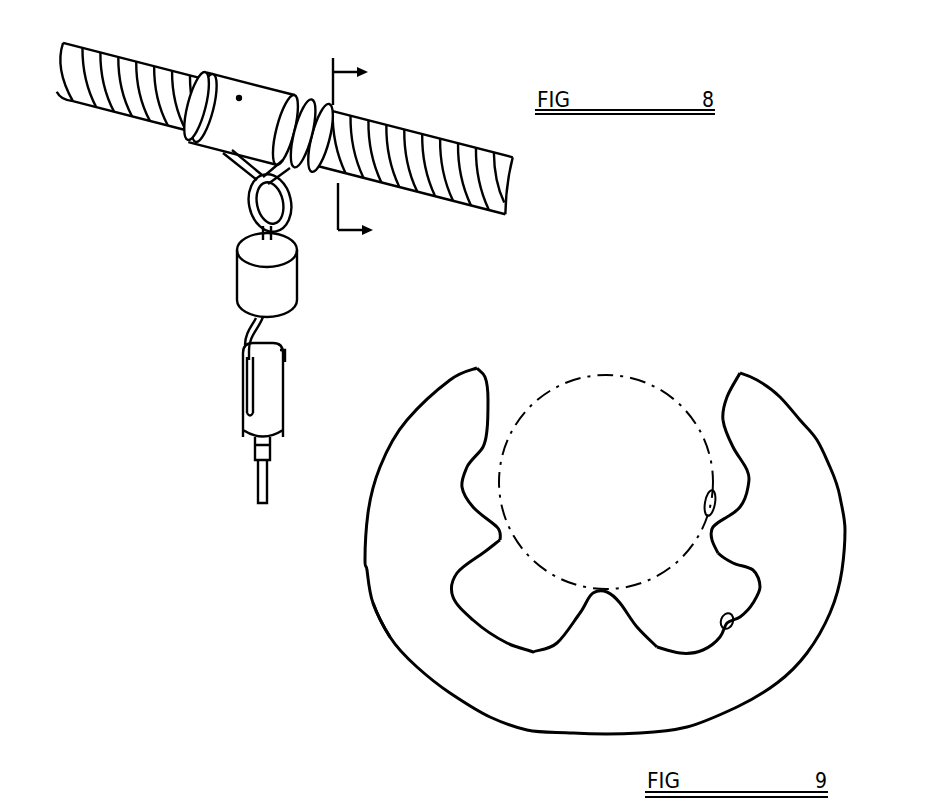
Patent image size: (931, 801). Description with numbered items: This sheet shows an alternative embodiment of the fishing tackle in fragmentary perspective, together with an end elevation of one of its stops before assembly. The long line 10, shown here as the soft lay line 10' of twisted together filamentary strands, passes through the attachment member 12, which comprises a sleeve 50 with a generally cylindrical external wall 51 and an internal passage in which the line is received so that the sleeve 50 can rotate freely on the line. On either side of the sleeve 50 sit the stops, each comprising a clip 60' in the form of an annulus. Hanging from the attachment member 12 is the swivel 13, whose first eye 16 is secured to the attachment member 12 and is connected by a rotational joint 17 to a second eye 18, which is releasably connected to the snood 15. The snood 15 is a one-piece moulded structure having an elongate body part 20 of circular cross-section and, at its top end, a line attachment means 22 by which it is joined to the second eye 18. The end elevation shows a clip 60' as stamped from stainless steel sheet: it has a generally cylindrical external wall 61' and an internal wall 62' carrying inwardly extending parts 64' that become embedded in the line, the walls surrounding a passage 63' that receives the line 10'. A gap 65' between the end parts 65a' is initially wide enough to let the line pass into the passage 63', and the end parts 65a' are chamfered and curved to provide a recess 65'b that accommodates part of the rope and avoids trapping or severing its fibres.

In FIG. 8, the line 10' is at (284, 128).
In FIG. 9, the line 10' is at (606, 442).
In FIG. 8, the attachment member 12 is at (289, 105).
In FIG. 8, the sleeve 50 is at (273, 83).
In FIG. 8, the external wall 51 is at (238, 97).
In FIG. 8, the stop 60' is at (289, 100).
In FIG. 9, the stop 60' is at (596, 548).
In FIG. 8, the long line 10 is at (363, 155).
In FIG. 8, the first eye 16 is at (295, 203).
In FIG. 8, the swivel 13 is at (260, 275).
In FIG. 8, the rotational joint 17 is at (297, 280).
In FIG. 8, the second eye 18 is at (256, 330).
In FIG. 8, the snood 15 is at (260, 423).
In FIG. 8, the line attachment means 22 is at (283, 408).
In FIG. 8, the body part 20 is at (257, 445).
In FIG. 9, the external wall 61' is at (622, 551).
In FIG. 9, the internal wall 62' is at (752, 635).
In FIG. 9, the passage 63' is at (724, 446).
In FIG. 9, the inwardly extending parts 64' is at (596, 598).
In FIG. 9, the gap 65' is at (605, 424).
In FIG. 9, the end parts 65a' is at (595, 357).
In FIG. 9, the recess 65'b is at (405, 702).